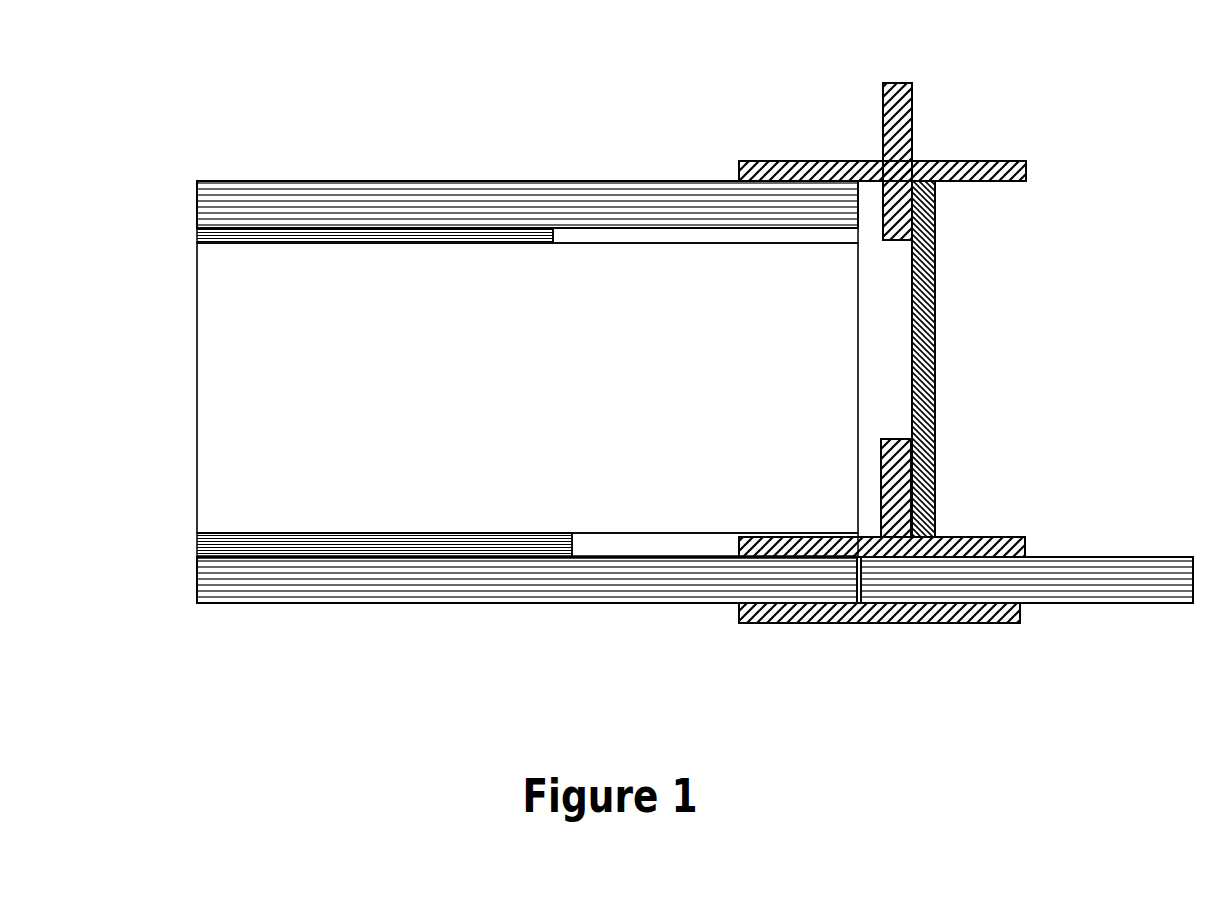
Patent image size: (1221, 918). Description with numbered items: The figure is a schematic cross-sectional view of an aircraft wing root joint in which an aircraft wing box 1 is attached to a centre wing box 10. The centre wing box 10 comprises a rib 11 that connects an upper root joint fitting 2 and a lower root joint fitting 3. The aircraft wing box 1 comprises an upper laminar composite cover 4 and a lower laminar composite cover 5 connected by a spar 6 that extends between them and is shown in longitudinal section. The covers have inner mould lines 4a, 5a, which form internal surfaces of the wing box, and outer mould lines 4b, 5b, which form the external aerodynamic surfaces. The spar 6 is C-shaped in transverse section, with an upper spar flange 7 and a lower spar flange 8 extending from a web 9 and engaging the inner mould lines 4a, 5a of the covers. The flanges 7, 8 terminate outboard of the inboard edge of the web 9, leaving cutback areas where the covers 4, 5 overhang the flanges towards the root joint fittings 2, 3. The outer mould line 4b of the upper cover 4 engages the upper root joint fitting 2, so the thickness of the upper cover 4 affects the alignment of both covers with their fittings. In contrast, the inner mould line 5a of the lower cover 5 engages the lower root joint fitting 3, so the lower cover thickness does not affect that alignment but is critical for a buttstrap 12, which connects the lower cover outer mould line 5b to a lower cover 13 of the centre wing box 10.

The aircraft wing box 1 is at (228, 96).
The upper root joint fitting 2 is at (912, 152).
The lower root joint fitting 3 is at (955, 535).
The upper laminar composite cover 4 is at (370, 200).
The inner mould line of the upper cover 4a is at (622, 227).
The outer mould line of the upper cover 4b is at (523, 180).
The lower laminar composite cover 5 is at (512, 578).
The inner mould line of the lower cover 5a is at (610, 557).
The outer mould line of the lower cover 5b is at (418, 603).
The spar 6 is at (167, 486).
The upper spar flange 7 is at (207, 233).
The lower spar flange 8 is at (199, 543).
The spar web 9 is at (252, 363).
The centre wing box 10 is at (1010, 106).
The rib 11 is at (922, 333).
The buttstrap 12 is at (1002, 610).
The lower cover of the centre wing box 13 is at (1117, 567).